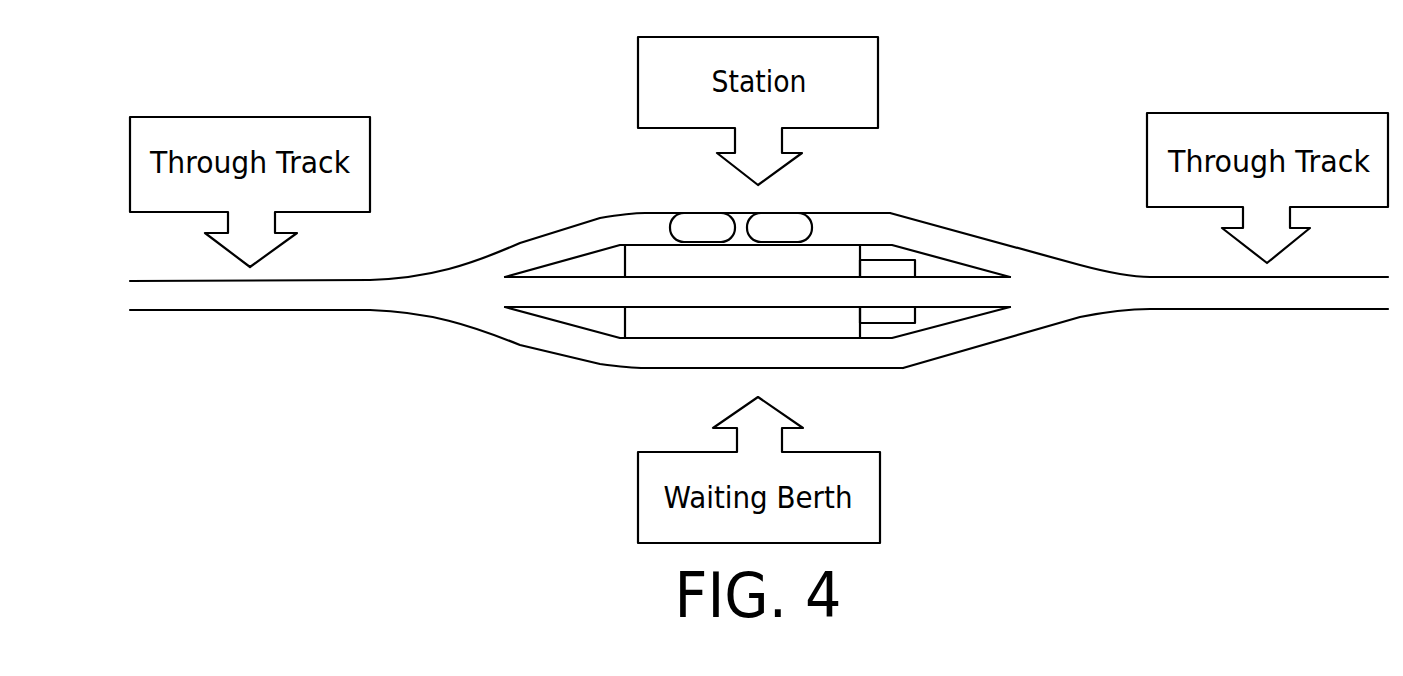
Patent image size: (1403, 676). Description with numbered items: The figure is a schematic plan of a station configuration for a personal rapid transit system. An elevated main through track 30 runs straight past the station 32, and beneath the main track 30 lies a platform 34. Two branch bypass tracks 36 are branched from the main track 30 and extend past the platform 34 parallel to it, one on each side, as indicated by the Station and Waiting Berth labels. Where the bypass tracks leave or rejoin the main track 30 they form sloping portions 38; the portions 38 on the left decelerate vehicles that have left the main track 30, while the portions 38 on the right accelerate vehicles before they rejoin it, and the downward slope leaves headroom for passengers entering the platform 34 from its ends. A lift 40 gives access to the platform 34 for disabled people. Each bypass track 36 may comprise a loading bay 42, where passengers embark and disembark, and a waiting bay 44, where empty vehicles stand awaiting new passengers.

The main through track 30 is at (254, 300).
The station 32 is at (944, 150).
The platform 34 is at (662, 325).
The bypass track 36 is at (883, 220).
The portions of the bypass tracks 38 is at (507, 242).
The lift 40 is at (907, 313).
The loading bay 42 is at (798, 222).
The waiting bay 44 is at (687, 222).